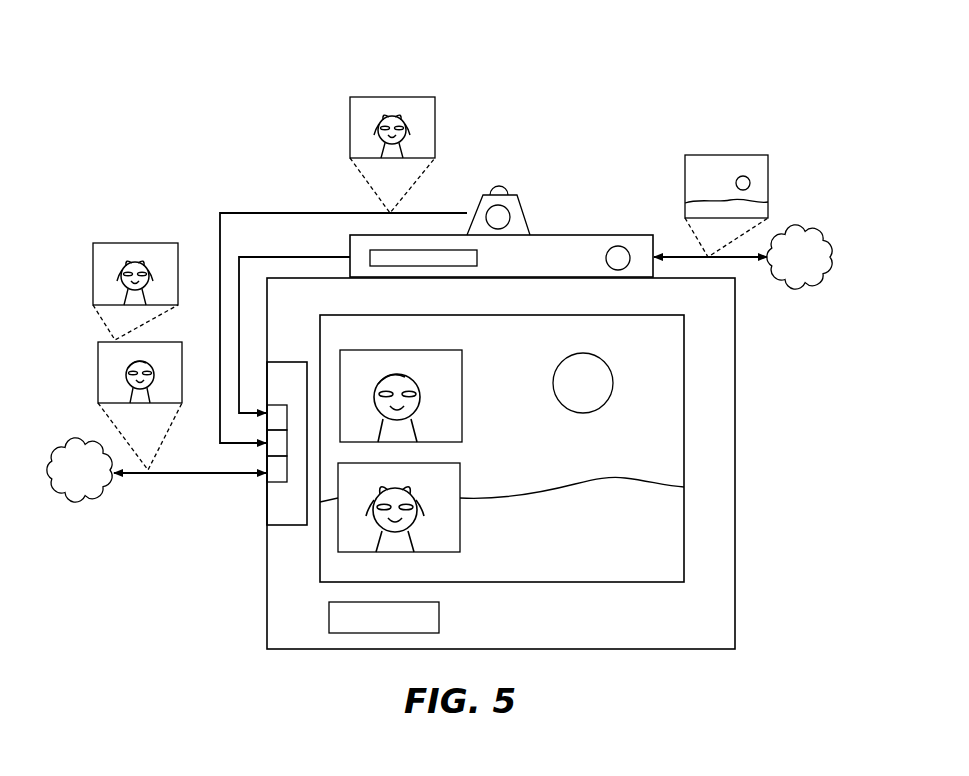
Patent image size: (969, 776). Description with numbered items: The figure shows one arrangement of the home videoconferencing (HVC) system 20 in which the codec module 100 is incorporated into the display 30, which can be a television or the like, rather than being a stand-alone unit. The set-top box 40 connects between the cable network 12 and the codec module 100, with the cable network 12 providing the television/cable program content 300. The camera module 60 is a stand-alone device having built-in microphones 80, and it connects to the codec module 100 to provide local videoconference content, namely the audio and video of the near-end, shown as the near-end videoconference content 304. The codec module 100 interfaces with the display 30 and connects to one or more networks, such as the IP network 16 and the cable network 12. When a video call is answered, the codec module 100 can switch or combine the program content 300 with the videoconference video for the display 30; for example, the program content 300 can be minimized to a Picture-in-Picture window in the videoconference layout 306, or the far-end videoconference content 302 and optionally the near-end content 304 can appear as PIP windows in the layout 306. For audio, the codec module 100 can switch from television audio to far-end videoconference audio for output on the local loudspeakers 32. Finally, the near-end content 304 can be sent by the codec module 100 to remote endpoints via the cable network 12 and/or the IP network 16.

The HVC system 20 is at (160, 92).
The display 30 is at (735, 455).
The local loudspeakers 32 is at (329, 609).
The set-top box 40 is at (596, 235).
The camera module 60 is at (524, 215).
The built-in microphones 80 is at (504, 190).
The codec module 100 is at (267, 507).
The cable network 12 is at (743, 257).
The IP network 16 is at (156, 470).
The program content 300 is at (695, 155).
The far-end videoconference content 302 is at (98, 360).
The near-end videoconference content 304 is at (358, 97).
The videoconference layout 306 is at (664, 371).